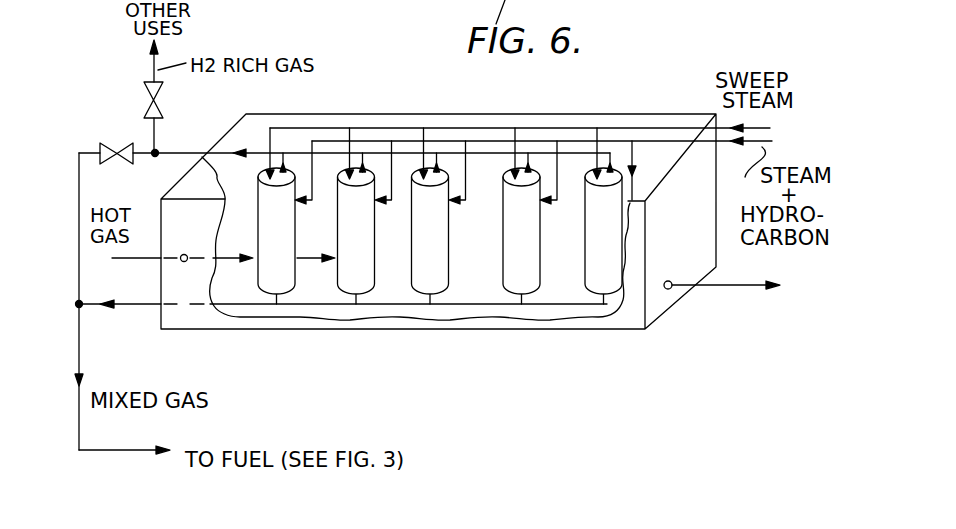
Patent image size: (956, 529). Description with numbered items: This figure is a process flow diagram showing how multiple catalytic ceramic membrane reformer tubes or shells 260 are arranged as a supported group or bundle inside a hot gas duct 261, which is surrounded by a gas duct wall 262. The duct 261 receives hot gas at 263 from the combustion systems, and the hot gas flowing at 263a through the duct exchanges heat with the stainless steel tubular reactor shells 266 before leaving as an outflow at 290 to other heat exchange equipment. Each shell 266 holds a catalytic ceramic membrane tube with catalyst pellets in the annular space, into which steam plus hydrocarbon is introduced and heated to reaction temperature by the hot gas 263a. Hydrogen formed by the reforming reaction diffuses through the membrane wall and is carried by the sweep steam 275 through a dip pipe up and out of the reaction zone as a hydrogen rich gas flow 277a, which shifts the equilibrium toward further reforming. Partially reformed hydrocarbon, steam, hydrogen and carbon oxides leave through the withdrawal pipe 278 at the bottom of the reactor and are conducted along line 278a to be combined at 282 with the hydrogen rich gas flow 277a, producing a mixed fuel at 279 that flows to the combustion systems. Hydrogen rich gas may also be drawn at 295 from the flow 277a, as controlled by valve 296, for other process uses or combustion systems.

The tubes or shells 260 is at (502, 266).
The hot gas duct 261 is at (397, 276).
The gas duct wall 262 is at (188, 313).
The hot gas inlet 263 is at (130, 258).
The hot gas flow 263a is at (312, 258).
The tubular reactor shells 266 is at (590, 263).
The sweep gas steam 275 is at (765, 123).
The hydrogen rich gas flow 277a is at (203, 153).
The withdrawal pipe 278 is at (573, 306).
The withdrawal line 278a is at (138, 306).
The mixed fuel 279 is at (105, 452).
The combining point 282 is at (79, 304).
The outflow 290 is at (717, 287).
The hydrogen rich gas draw 295 is at (150, 123).
The valve 296 is at (145, 88).